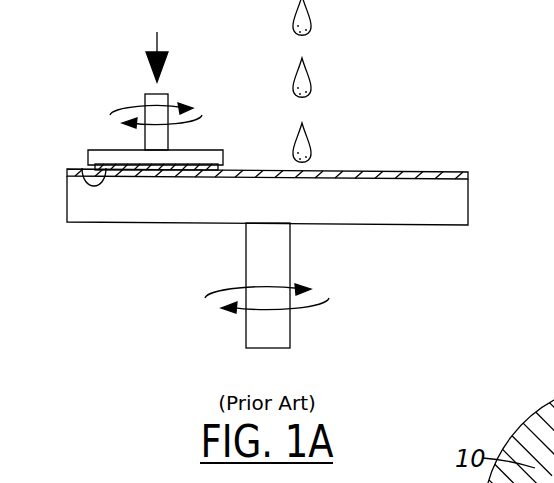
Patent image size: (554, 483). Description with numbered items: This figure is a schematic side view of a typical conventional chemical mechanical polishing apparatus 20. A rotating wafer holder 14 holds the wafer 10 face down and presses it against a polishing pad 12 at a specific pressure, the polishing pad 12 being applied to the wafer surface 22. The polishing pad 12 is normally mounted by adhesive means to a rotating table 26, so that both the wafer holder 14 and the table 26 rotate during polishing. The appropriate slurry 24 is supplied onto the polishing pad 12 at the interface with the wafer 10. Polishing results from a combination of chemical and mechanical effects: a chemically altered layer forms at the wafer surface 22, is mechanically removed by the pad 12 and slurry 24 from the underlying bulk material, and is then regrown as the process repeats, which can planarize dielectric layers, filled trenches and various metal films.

The wafer 10 is at (207, 163).
The polishing pad 12 is at (470, 173).
The rotating wafer holder 14 is at (222, 156).
The chemical mechanical polishing apparatus 20 is at (243, 43).
The wafer surface 22 is at (84, 168).
The slurry 24 is at (308, 83).
The rotating table 26 is at (450, 208).